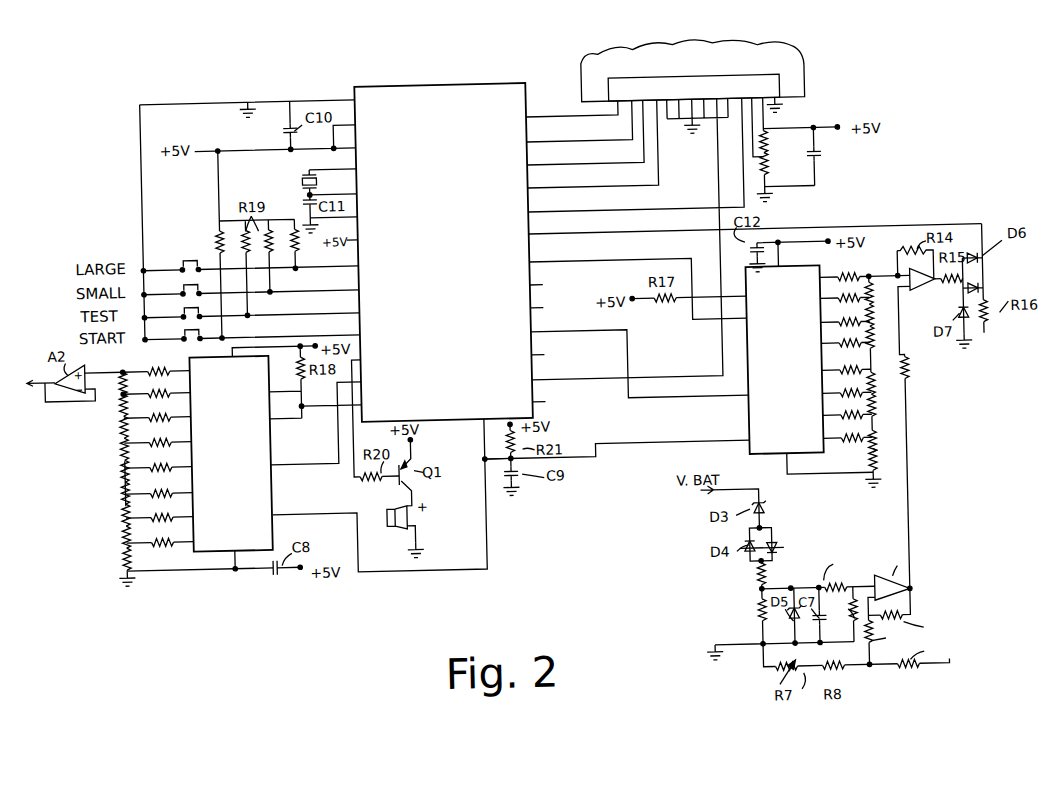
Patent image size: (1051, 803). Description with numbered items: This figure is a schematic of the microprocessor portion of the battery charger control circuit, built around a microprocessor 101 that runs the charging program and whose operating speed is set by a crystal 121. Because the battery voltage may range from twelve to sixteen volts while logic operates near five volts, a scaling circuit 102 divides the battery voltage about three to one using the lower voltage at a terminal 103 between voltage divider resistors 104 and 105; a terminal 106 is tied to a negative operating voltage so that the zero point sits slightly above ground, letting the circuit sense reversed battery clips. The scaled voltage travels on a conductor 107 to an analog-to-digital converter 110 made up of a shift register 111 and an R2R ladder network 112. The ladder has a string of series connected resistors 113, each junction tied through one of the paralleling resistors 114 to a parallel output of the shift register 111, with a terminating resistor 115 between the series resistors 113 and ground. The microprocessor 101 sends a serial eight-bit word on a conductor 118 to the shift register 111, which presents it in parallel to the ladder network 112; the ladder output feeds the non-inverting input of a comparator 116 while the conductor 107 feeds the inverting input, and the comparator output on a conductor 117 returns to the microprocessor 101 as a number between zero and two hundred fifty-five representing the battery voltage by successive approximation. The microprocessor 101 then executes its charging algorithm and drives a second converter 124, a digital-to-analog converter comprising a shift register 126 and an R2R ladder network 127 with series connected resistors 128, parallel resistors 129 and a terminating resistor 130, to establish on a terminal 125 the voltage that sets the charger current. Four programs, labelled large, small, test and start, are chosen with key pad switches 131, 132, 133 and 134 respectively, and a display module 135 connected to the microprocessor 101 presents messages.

The microprocessor 101 is at (461, 90).
The scaling circuit 102 is at (875, 553).
The terminal 103 is at (755, 594).
The voltage divider resistor 104 is at (750, 575).
The voltage divider resistor 105 is at (752, 628).
The terminal 106 is at (946, 680).
The conductor 107 is at (906, 515).
The analog-to-digital converter 110 is at (912, 383).
The shift register 111 is at (797, 310).
The R2R ladder network 112 is at (878, 357).
The series connected resistors 113 is at (880, 395).
The paralleling resistors 114 is at (855, 351).
The terminating resistor 115 is at (875, 460).
The comparator 116 is at (930, 299).
The conductor 117 is at (895, 234).
The conductor 118 is at (660, 252).
The crystal 121 is at (303, 179).
The second converter 124 is at (228, 570).
The terminal 125 is at (32, 382).
The shift register 126 is at (243, 391).
The R2R ladder network 127 is at (123, 440).
The series connected resistors 128 is at (128, 452).
The parallel resistors 129 is at (169, 440).
The terminating resistor 130 is at (127, 549).
The key pad switch 131 is at (182, 254).
The key pad switch 132 is at (251, 283).
The key pad switch 133 is at (251, 307).
The key pad switch 134 is at (252, 330).
The display module 135 is at (800, 68).